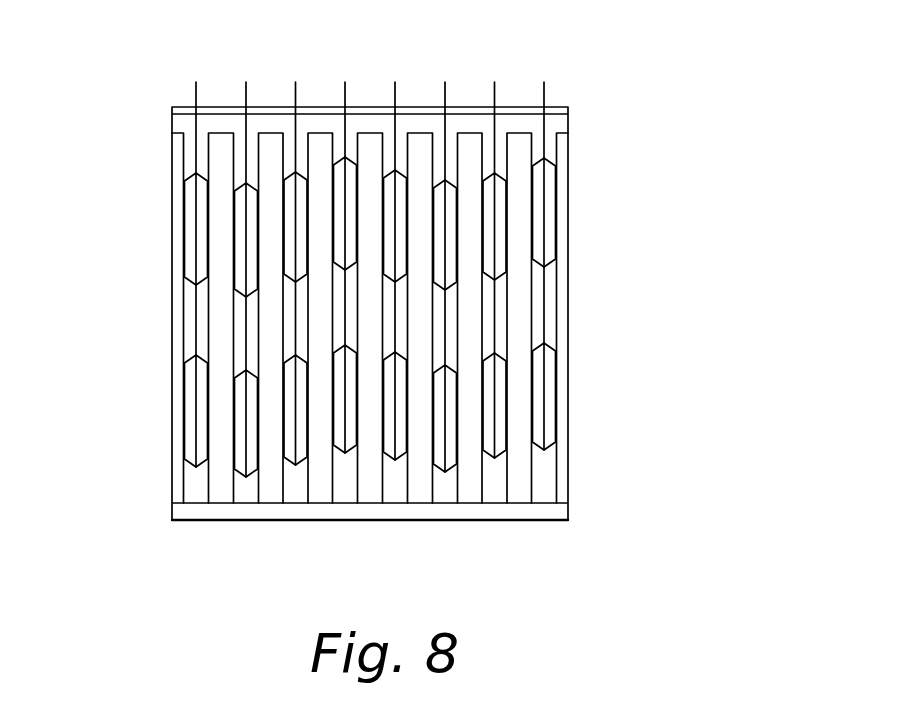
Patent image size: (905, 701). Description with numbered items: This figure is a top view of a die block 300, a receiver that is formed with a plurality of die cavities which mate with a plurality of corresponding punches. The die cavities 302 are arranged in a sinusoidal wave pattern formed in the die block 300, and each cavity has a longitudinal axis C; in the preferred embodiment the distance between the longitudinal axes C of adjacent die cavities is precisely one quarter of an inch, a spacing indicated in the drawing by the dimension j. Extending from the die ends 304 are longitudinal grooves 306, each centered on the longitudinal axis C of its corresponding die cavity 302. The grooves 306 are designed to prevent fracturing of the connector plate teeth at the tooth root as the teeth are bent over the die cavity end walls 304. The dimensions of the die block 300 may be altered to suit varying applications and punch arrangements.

The die block 300 is at (557, 72).
The die cavities 302 is at (190, 236).
The die ends 304 is at (196, 177).
The longitudinal grooves 306 is at (195, 488).
The longitudinal axes C is at (445, 82).
The pitch dimension j is at (246, 85).